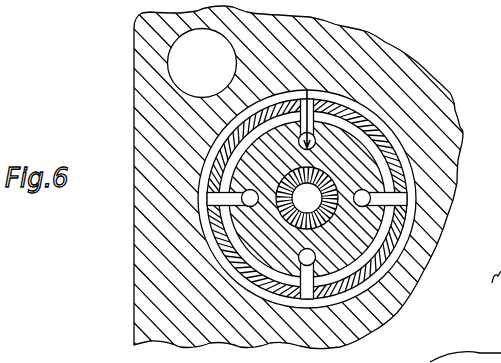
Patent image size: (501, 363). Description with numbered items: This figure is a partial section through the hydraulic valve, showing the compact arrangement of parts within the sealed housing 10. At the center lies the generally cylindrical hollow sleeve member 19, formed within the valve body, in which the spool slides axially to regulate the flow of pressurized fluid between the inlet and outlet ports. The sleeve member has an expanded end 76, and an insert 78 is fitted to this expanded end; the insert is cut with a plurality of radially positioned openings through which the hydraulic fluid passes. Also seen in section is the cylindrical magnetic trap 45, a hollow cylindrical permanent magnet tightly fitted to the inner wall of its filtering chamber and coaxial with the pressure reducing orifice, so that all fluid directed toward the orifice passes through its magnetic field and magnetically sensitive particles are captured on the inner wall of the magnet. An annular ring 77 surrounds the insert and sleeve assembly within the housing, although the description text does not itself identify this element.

The sealed housing 10 is at (448, 103).
The ring 77 is at (308, 110).
The expanded end of the sleeve member 76 is at (342, 147).
The insert 78 is at (287, 199).
The cylindrical magnetic trap 45 is at (324, 211).
The hollow sleeve member 19 is at (300, 130).